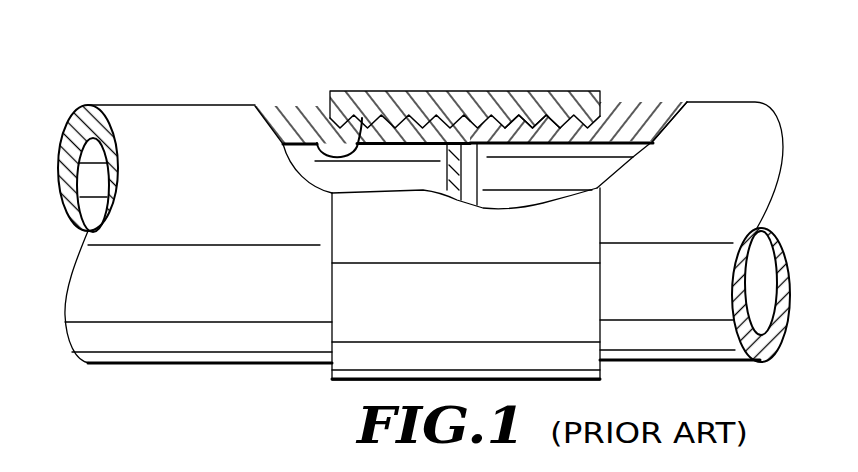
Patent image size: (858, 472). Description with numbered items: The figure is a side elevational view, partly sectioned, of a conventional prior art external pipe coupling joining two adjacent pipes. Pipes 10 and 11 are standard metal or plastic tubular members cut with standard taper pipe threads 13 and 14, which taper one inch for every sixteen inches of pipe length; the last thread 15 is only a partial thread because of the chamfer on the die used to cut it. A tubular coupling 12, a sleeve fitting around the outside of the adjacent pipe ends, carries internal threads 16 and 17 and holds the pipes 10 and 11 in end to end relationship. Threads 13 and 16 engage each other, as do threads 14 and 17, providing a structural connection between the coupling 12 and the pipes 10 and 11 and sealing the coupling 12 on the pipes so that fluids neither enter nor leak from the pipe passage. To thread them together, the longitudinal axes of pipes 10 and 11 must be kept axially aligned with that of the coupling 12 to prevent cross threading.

The pipe 10 is at (133, 123).
The pipe 11 is at (732, 130).
The tubular coupling 12 is at (463, 90).
The taper pipe thread 13 is at (323, 142).
The taper pipe thread 14 is at (587, 113).
The last thread 15 is at (350, 108).
The internal thread 16 is at (387, 105).
The internal thread 17 is at (530, 103).